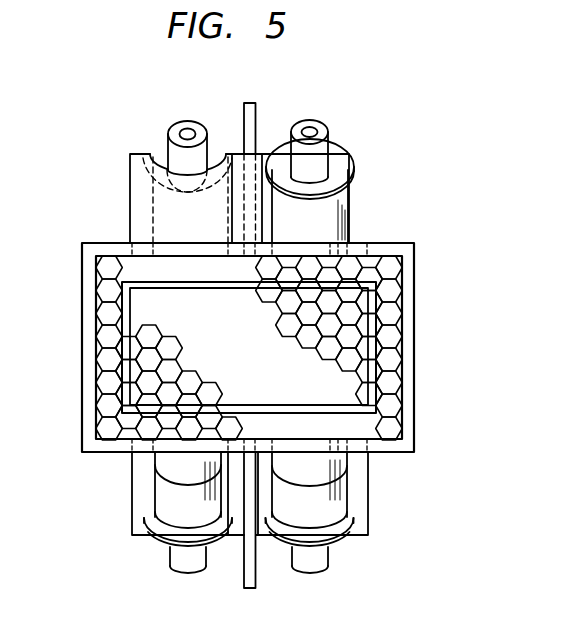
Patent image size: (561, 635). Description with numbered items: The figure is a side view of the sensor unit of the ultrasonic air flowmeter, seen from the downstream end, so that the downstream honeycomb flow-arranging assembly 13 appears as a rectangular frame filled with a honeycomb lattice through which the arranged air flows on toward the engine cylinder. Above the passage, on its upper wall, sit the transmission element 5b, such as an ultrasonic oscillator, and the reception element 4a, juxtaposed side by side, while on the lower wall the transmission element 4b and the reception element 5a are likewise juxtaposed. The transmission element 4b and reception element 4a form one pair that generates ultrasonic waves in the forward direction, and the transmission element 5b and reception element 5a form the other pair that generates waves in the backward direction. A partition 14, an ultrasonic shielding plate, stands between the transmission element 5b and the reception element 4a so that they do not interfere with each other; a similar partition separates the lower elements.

The downstream honeycomb flow-arranging assembly 13 is at (408, 317).
The partition 14 is at (252, 120).
The reception element 4a is at (163, 148).
The transmission element 4b is at (172, 540).
The reception element 5a is at (330, 538).
The transmission element 5b is at (340, 170).